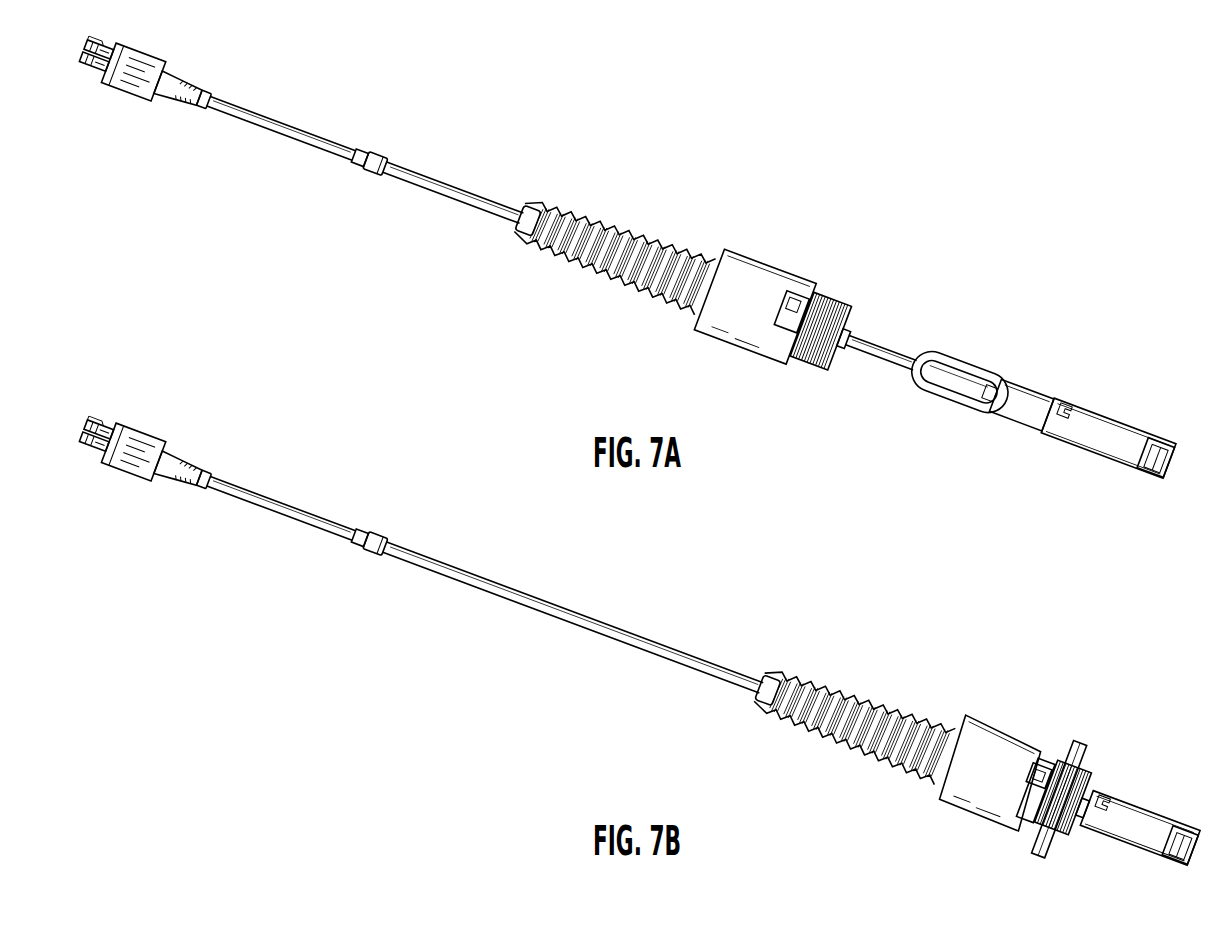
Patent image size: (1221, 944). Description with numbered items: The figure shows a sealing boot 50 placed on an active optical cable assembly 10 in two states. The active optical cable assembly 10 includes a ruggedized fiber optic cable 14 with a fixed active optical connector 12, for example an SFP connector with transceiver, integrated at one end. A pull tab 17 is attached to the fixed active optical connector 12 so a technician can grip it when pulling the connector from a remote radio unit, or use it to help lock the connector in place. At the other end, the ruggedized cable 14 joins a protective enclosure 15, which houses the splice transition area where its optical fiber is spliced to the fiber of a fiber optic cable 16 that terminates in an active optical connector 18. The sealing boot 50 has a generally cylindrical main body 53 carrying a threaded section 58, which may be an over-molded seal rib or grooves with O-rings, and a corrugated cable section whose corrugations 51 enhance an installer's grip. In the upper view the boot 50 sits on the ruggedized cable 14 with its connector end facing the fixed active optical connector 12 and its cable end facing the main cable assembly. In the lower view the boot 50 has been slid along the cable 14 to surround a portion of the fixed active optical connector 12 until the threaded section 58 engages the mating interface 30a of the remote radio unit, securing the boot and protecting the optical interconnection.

In FIG. 7B, the active optical cable assembly 10 is at (634, 657).
In FIG. 7A, the fixed active optical connector 12 is at (1105, 430).
In FIG. 7B, the fixed active optical connector 12 is at (1133, 813).
In FIG. 7A, the fiber optic cable 14 is at (462, 195).
In FIG. 7B, the fiber optic cable 14 is at (503, 590).
In FIG. 7A, the protective enclosure 15 is at (377, 158).
In FIG. 7B, the protective enclosure 15 is at (383, 556).
In FIG. 7A, the fiber optic cable 16 is at (300, 130).
In FIG. 7B, the fiber optic cable 16 is at (300, 510).
In FIG. 7A, the pull tab 17 is at (958, 368).
In FIG. 7A, the active optical connector 18 is at (131, 55).
In FIG. 7B, the active optical connector 18 is at (138, 468).
In FIG. 7B, the mating interface 30a is at (1092, 733).
In FIG. 7A, the sealing boot 50 is at (684, 293).
In FIG. 7B, the sealing boot 50 is at (924, 763).
In FIG. 7A, the corrugations 51 is at (637, 248).
In FIG. 7B, the corrugations 51 is at (842, 702).
In FIG. 7A, the main body 53 is at (770, 283).
In FIG. 7B, the main body 53 is at (997, 742).
In FIG. 7A, the threaded section 58 is at (806, 367).
In FIG. 7B, the threaded section 58 is at (1073, 832).